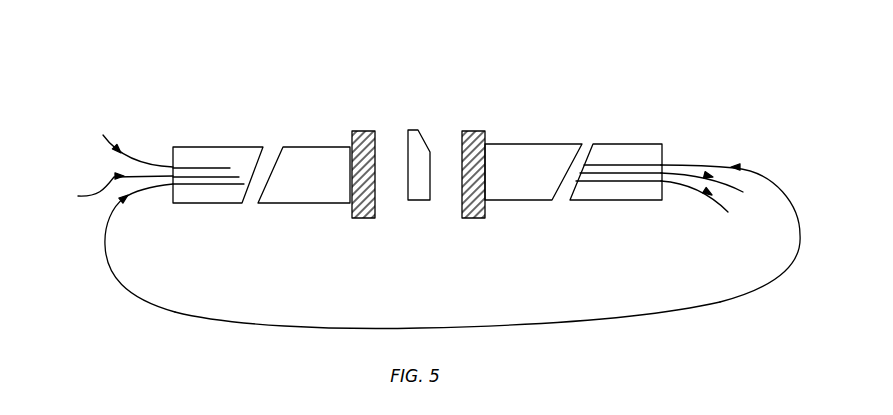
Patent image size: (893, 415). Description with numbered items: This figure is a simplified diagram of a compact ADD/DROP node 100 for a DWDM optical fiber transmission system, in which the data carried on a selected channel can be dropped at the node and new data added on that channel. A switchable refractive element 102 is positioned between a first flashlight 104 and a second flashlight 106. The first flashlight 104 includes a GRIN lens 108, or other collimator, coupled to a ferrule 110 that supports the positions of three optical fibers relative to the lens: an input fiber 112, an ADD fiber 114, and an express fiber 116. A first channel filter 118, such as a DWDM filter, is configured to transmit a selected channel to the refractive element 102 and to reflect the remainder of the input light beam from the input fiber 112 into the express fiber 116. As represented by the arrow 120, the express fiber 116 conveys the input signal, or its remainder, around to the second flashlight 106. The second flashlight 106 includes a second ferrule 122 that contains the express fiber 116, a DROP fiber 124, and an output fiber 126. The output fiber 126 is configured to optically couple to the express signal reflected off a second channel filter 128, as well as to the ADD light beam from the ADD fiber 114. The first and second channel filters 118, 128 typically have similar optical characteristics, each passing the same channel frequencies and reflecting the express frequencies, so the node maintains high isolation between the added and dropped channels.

The ADD/DROP node 100 is at (716, 61).
The switchable refractive element 102 is at (418, 200).
The first flashlight 104 is at (261, 163).
The second flashlight 106 is at (573, 161).
The GRIN lens 108 is at (316, 147).
The ferrule 110 is at (215, 203).
The input fiber 112 is at (133, 160).
The ADD fiber 114 is at (107, 190).
The express fiber 116 is at (277, 322).
The first channel filter 118 is at (365, 218).
The arrow 120 is at (133, 193).
The second ferrule 122 is at (628, 202).
The DROP fiber 124 is at (727, 188).
The output fiber 126 is at (693, 187).
The second channel filter 128 is at (473, 218).